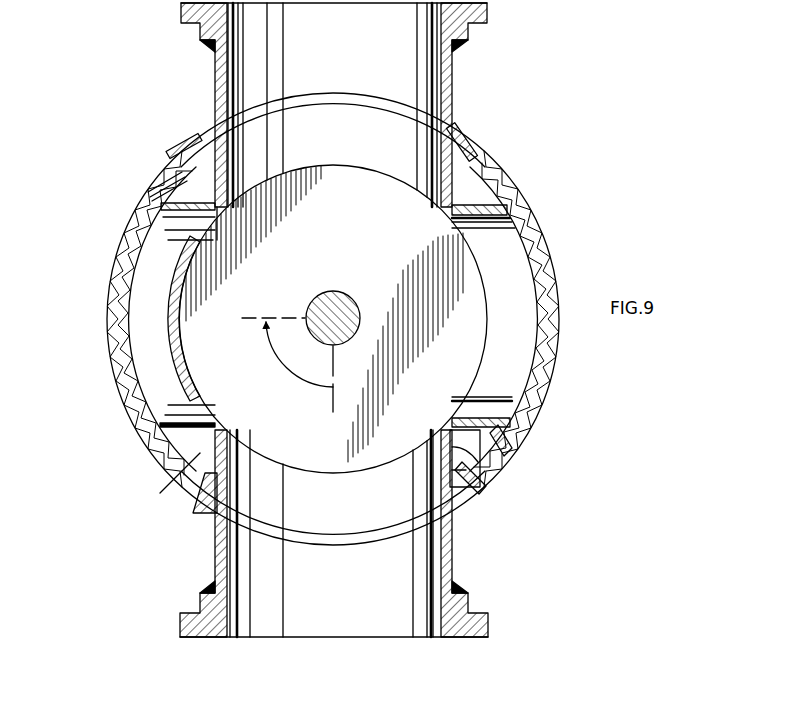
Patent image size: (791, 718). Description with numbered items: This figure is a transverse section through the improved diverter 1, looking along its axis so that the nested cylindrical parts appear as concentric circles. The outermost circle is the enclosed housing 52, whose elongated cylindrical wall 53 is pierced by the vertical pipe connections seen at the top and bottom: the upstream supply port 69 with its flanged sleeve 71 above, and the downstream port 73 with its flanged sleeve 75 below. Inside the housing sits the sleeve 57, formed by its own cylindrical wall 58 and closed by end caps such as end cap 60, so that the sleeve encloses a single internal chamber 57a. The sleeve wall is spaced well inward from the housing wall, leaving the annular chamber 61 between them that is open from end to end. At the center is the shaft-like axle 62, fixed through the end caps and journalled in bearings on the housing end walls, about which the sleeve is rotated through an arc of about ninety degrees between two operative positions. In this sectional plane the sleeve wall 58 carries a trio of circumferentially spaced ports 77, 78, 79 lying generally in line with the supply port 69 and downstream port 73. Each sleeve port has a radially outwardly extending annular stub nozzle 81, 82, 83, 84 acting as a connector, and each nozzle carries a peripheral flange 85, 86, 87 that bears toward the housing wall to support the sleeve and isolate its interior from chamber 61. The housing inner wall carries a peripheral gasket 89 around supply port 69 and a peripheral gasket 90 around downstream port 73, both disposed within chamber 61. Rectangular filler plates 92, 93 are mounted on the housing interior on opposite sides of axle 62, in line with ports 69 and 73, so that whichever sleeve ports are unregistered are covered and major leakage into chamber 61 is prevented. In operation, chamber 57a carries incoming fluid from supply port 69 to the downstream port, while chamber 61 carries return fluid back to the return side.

The diverter 1 is at (575, 170).
The housing 52 is at (166, 150).
The cylindrical wall 53 is at (500, 160).
The sleeve 57 is at (168, 299).
The internal chamber 57a is at (224, 387).
The cylindrical wall 58 is at (190, 328).
The end cap 60 is at (388, 221).
The chamber 61 is at (186, 470).
The axle 62 is at (348, 306).
The port 69 is at (354, 55).
The flanged sleeve 71 is at (214, 68).
The port 73 is at (372, 597).
The flanged sleeve 75 is at (216, 563).
The port 77 is at (384, 145).
The port 78 is at (358, 508).
The port 79 is at (528, 341).
The stub nozzle 81 is at (220, 180).
The stub nozzle 82 is at (470, 478).
The stub nozzle 83 is at (480, 476).
The stub nozzle 84 is at (165, 230).
The peripheral flange 85 is at (176, 146).
The peripheral flange 86 is at (470, 473).
The peripheral flange 87 is at (505, 447).
The peripheral gasket 89 is at (464, 130).
The peripheral gasket 90 is at (455, 485).
The rectangular plate 92 is at (538, 250).
The rectangular plate 93 is at (172, 179).